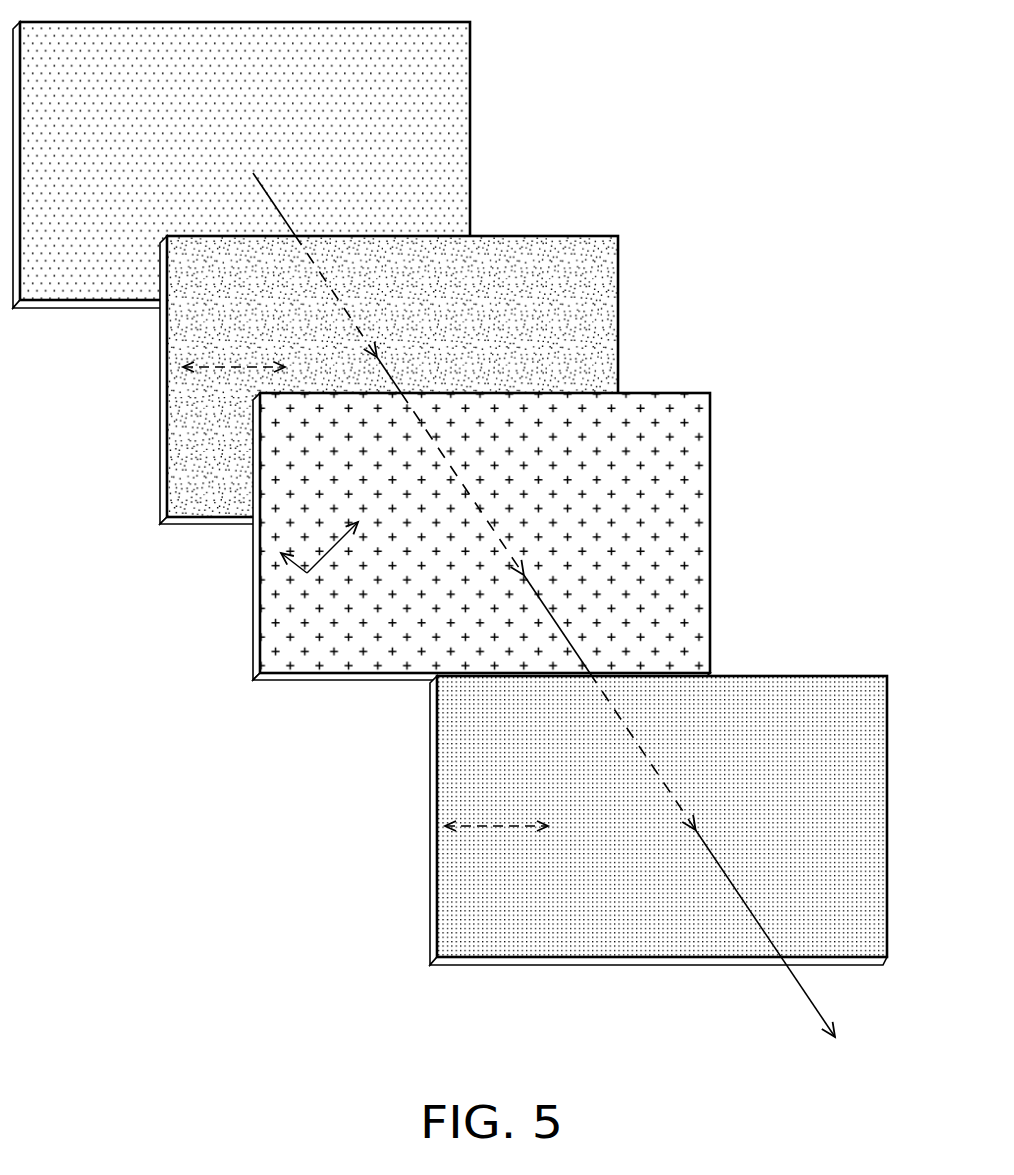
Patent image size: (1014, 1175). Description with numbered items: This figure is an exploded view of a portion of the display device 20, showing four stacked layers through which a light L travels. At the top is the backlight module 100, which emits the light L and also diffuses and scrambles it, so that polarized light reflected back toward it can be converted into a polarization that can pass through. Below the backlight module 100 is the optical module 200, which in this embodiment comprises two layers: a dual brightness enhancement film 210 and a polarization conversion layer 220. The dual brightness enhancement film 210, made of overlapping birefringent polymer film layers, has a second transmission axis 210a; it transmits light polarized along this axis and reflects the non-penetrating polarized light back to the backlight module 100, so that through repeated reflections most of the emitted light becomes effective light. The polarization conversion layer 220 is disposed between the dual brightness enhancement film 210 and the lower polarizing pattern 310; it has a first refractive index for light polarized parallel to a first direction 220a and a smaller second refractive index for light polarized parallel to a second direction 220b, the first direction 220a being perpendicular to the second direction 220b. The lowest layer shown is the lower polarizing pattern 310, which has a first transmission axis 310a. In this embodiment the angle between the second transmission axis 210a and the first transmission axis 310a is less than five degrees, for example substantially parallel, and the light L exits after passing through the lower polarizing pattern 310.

The display device 20 is at (471, 529).
The backlight module 100 is at (447, 143).
The optical module 200 is at (508, 458).
The dual brightness enhancement film 210 is at (593, 358).
The second transmission axis 210a is at (237, 365).
The polarization conversion layer 220 is at (521, 536).
The first direction 220a is at (327, 550).
The second direction 220b is at (307, 573).
The lower polarizing pattern 310 is at (857, 680).
The first transmission axis 310a is at (495, 825).
The light L is at (290, 222).